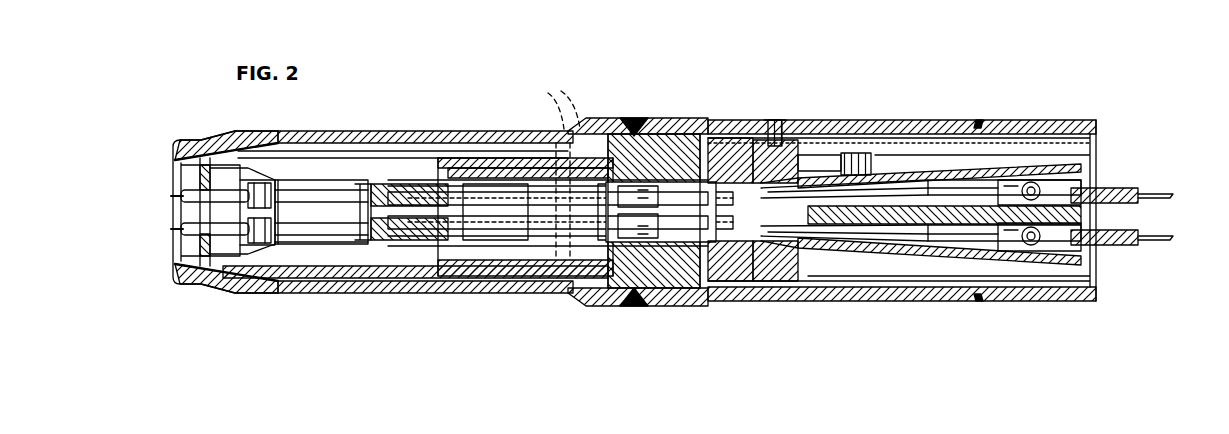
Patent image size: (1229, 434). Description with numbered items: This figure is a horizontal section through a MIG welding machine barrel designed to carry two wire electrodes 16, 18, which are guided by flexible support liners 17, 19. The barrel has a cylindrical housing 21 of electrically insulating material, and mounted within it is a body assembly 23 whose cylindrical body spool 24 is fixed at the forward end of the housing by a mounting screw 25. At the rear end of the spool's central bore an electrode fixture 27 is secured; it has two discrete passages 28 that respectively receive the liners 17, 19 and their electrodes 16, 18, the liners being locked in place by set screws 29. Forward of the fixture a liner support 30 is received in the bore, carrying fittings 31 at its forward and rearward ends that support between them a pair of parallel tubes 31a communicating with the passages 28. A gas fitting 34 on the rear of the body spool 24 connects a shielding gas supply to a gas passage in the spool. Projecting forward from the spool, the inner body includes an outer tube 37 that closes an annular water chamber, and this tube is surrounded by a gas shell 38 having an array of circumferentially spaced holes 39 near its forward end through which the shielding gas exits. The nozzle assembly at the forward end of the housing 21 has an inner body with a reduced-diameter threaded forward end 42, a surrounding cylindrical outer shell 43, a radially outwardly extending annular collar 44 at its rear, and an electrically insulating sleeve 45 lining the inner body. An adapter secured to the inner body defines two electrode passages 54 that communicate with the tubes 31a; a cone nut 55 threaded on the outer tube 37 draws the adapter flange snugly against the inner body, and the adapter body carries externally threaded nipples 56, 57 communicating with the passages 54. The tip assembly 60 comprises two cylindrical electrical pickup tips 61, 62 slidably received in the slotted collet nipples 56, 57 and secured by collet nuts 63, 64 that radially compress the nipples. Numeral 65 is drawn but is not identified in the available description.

The wire electrode 16 is at (162, 186).
The flexible support liner 17 is at (1110, 180).
The wire electrode 18 is at (165, 222).
The flexible support liner 19 is at (1120, 238).
The cylindrical housing 21 is at (892, 113).
The body assembly 23 is at (698, 294).
The cylindrical body spool 24 is at (745, 294).
The mounting screw 25 is at (767, 112).
The electrode fixture 27 is at (937, 258).
The passages 28 is at (898, 250).
The set screw 29 is at (1034, 255).
The liner support 30 is at (595, 290).
The fitting 31 is at (728, 130).
The parallel tubes 31a is at (637, 296).
The gas fitting 34 is at (820, 147).
The outer tube 37 is at (813, 252).
The gas shell 38 is at (673, 110).
The holes 39 is at (550, 169).
The threaded forward end 42 is at (250, 283).
The cylindrical outer shell 43 is at (322, 286).
The annular collar 44 is at (616, 126).
The electrically insulating sleeve 45 is at (380, 152).
The electrode passages 54 is at (404, 266).
The cone nut 55 is at (443, 160).
The externally threaded nipple 56 is at (316, 172).
The externally threaded nipple 57 is at (262, 270).
The tip assembly 60 is at (202, 216).
The electrical pickup tip 61 is at (218, 140).
The electrical pickup tip 62 is at (195, 250).
The collet nut 63 is at (266, 174).
The collet nut 64 is at (200, 276).
The marker pin 65 is at (972, 112).